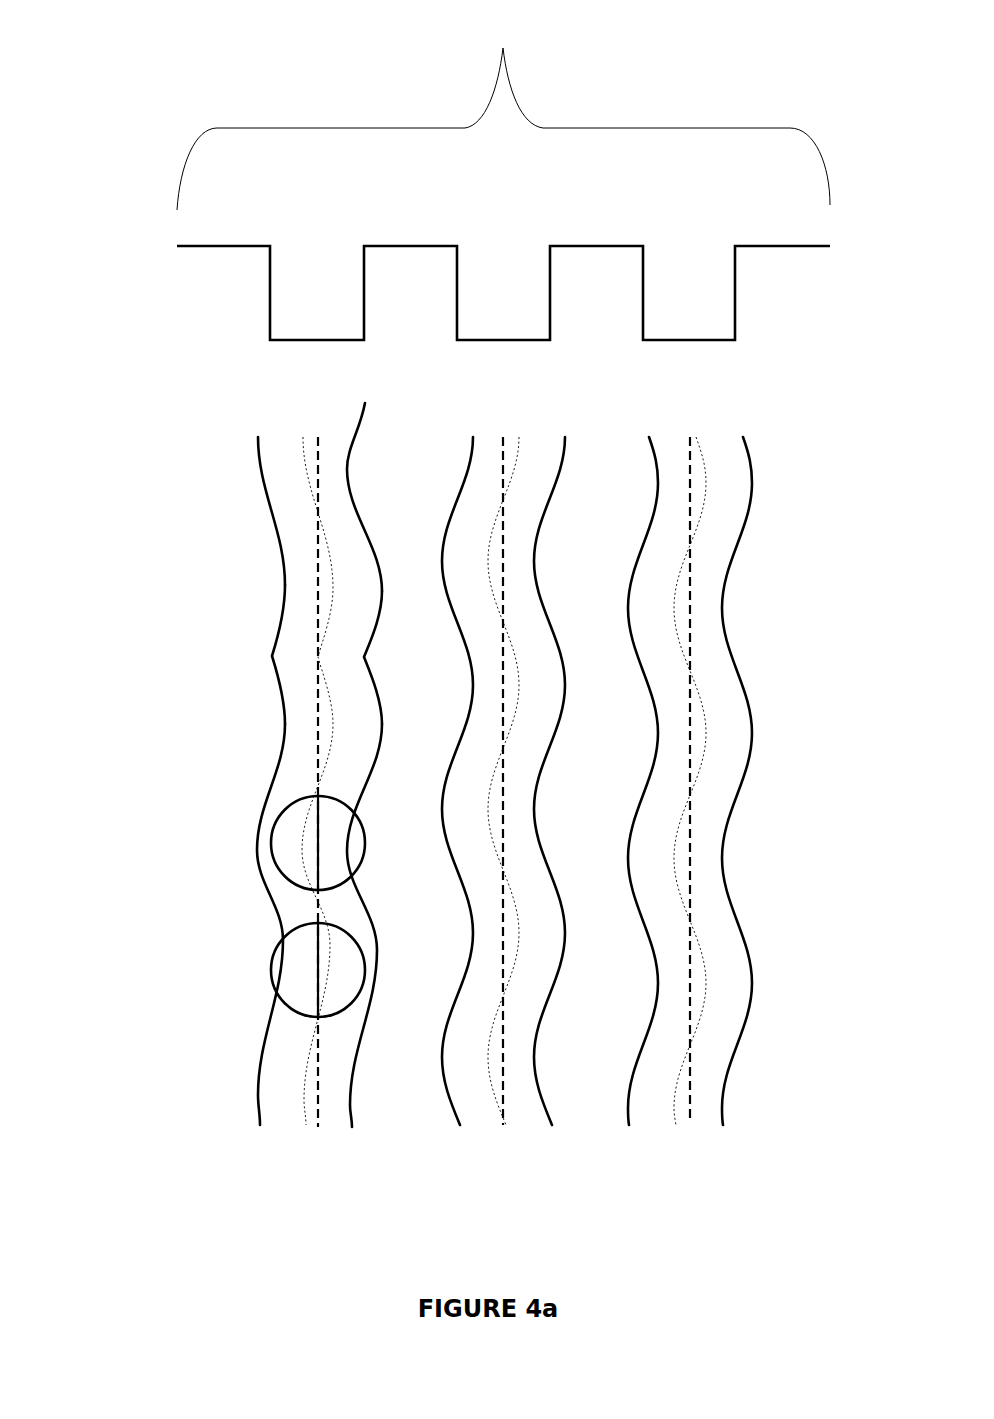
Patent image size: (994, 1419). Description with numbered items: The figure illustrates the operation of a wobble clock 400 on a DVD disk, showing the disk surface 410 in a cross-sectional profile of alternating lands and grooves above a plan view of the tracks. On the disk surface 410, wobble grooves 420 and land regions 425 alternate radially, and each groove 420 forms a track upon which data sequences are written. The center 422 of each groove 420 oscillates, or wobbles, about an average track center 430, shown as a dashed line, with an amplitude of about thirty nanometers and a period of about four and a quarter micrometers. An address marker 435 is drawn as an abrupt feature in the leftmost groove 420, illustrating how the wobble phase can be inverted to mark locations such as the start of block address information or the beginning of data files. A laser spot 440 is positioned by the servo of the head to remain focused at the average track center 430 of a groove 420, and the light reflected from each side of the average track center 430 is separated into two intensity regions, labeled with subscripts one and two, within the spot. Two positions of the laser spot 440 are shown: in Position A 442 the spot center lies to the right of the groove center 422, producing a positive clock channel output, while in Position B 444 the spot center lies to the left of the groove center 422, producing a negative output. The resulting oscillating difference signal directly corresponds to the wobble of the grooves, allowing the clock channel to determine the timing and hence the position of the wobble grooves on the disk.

The wobble clock 400 is at (705, 90).
The disk surface 410 is at (503, 115).
The wobble groove 420 is at (504, 765).
The groove center 422 is at (677, 590).
The land region 425 is at (512, 781).
The average track center 430 is at (690, 1123).
The address marker 435 is at (272, 656).
The laser spot 440 is at (201, 906).
The Position A 442 is at (270, 845).
The Position B 444 is at (270, 970).